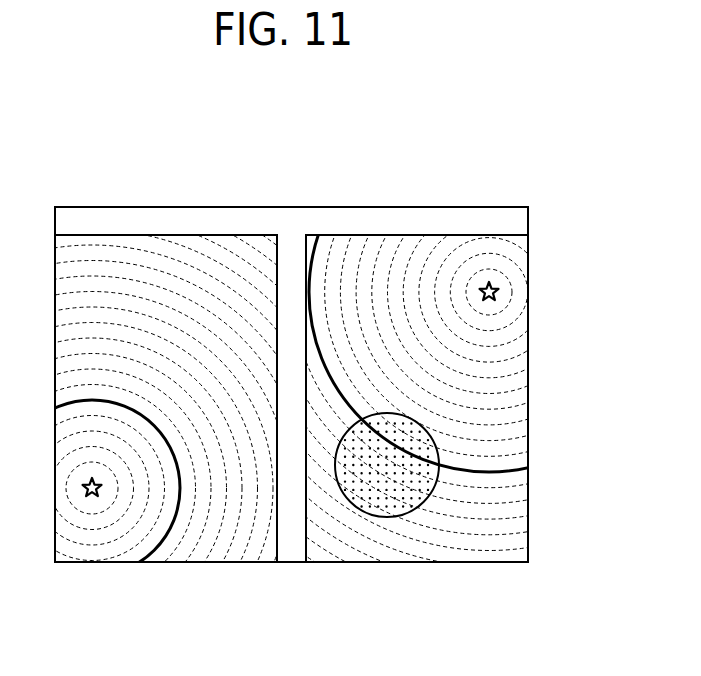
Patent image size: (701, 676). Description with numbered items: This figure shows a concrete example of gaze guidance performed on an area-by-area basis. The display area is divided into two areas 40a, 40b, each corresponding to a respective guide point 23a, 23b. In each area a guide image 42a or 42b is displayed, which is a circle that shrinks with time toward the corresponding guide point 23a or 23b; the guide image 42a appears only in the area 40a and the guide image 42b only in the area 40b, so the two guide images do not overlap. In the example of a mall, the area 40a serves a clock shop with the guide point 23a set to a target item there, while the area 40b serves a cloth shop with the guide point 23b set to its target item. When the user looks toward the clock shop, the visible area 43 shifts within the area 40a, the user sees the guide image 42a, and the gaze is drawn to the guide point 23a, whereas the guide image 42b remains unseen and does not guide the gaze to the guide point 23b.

The area 40a is at (413, 233).
The area 40b is at (161, 233).
The guide point 23a is at (497, 288).
The guide point 23b is at (94, 500).
The guide image 42a is at (482, 468).
The guide image 42b is at (176, 517).
The visible area 43 is at (407, 507).